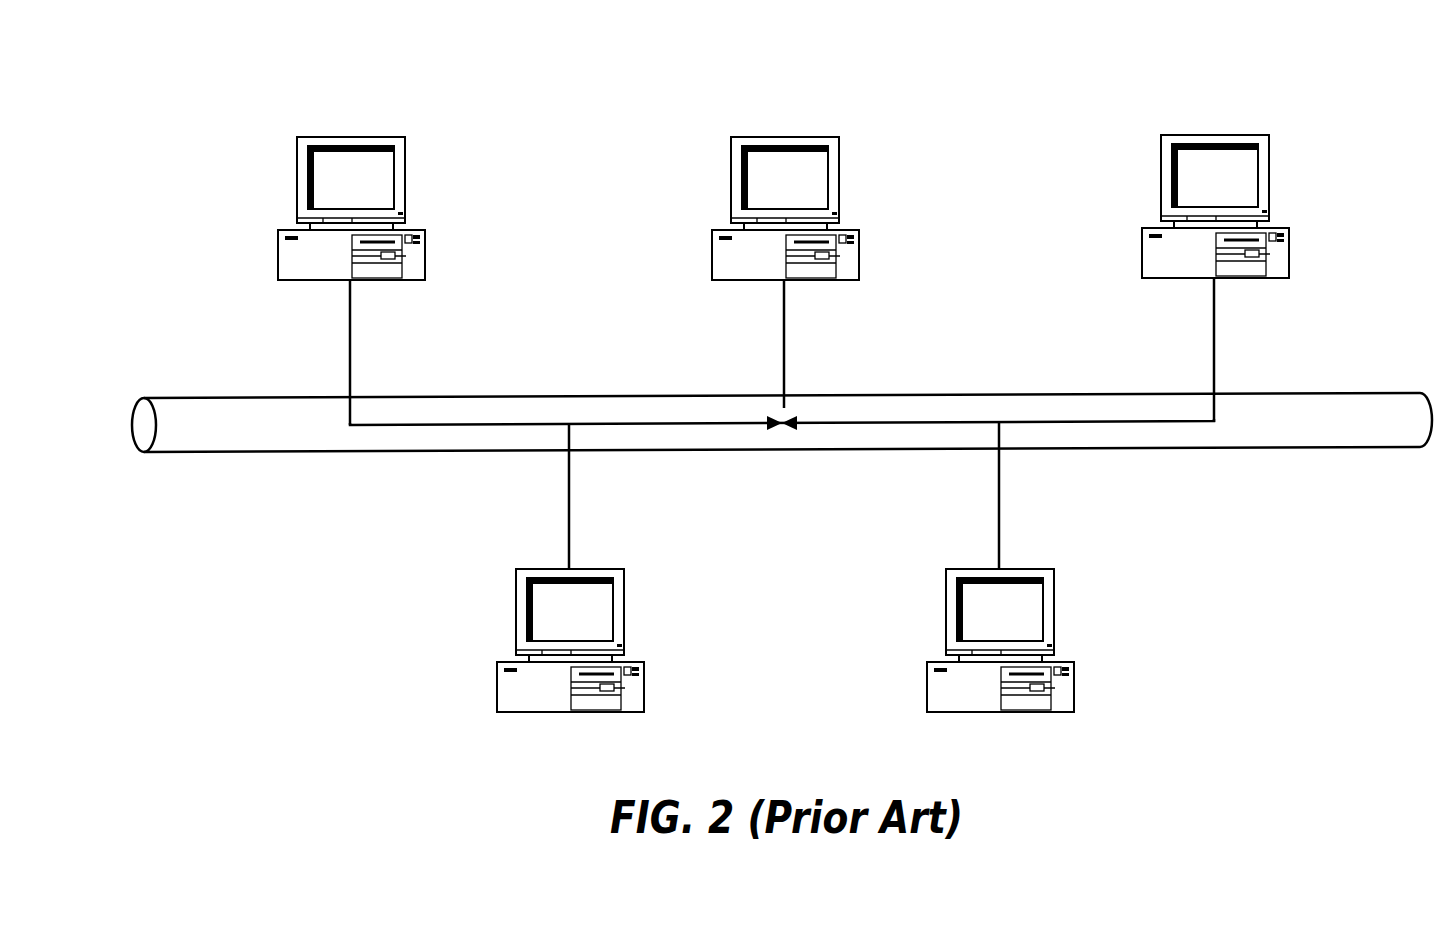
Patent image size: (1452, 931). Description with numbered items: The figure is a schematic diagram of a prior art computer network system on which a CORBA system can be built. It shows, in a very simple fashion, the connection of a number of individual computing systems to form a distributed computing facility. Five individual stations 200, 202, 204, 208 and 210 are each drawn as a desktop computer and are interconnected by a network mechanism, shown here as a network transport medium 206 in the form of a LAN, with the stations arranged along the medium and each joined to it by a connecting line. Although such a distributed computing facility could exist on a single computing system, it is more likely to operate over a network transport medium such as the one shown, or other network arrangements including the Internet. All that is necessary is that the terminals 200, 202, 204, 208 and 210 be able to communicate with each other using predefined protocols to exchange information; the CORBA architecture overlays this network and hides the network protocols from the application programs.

The station 200 is at (370, 265).
The station 202 is at (804, 257).
The station 204 is at (1234, 263).
The network bus 206 is at (782, 395).
The station 208 is at (589, 568).
The station 210 is at (1019, 567).